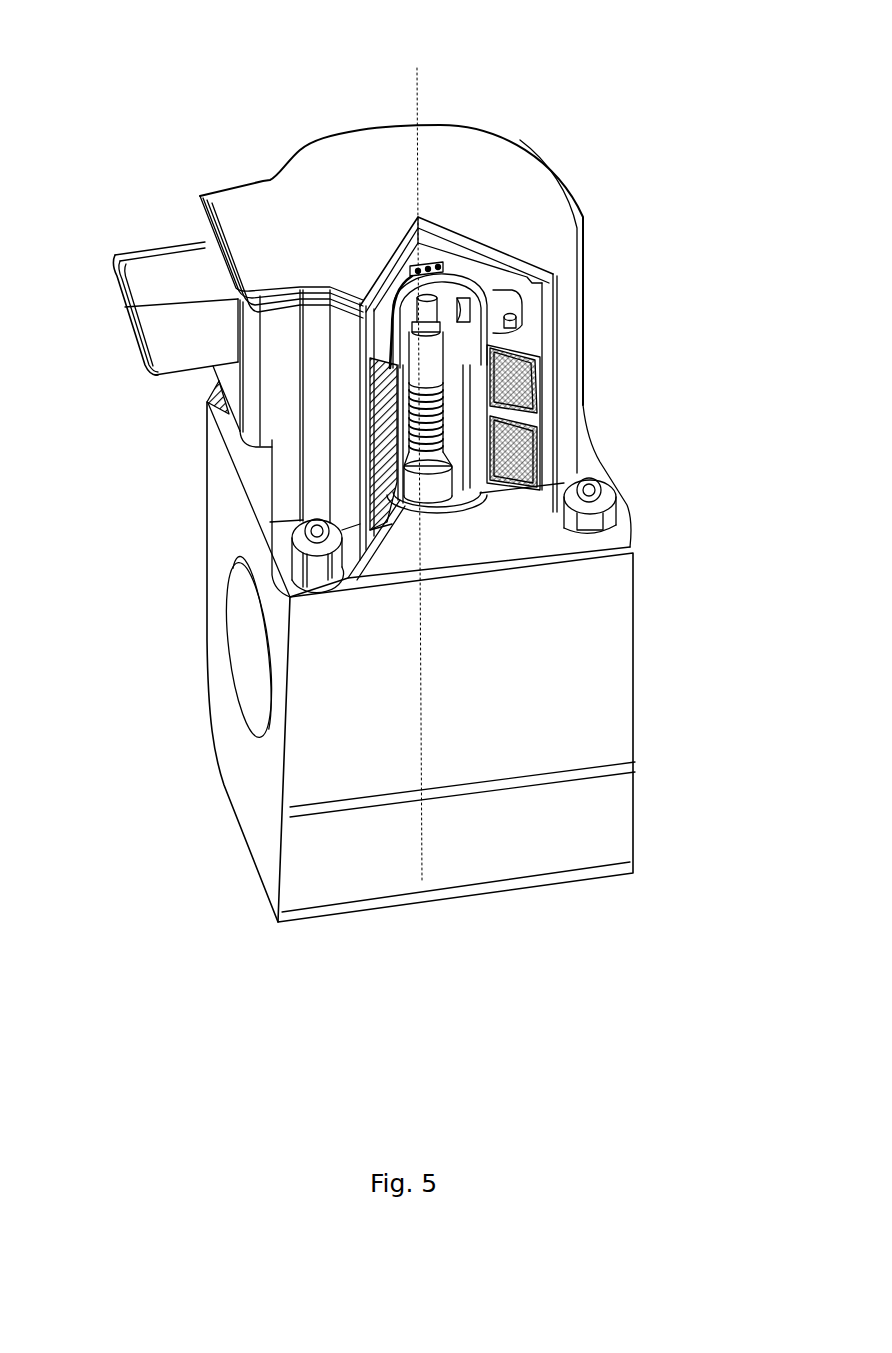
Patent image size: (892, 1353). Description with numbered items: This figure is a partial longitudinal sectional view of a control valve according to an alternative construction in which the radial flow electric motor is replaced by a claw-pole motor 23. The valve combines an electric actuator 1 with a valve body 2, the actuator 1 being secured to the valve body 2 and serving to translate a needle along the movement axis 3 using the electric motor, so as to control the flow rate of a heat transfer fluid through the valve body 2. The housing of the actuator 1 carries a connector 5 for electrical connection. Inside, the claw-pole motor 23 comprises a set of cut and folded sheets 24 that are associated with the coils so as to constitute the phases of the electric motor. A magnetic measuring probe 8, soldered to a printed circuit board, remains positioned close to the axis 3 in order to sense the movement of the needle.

The electric actuator 1 is at (578, 310).
The valve body 2 is at (565, 660).
The movement axis 3 is at (421, 104).
The connector 5 is at (188, 283).
The probe 8 is at (441, 263).
The claw-pole motor 23 is at (521, 337).
The cut and folded sheets 24 is at (518, 420).